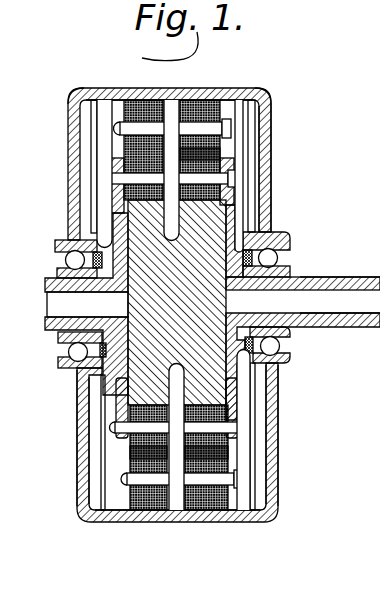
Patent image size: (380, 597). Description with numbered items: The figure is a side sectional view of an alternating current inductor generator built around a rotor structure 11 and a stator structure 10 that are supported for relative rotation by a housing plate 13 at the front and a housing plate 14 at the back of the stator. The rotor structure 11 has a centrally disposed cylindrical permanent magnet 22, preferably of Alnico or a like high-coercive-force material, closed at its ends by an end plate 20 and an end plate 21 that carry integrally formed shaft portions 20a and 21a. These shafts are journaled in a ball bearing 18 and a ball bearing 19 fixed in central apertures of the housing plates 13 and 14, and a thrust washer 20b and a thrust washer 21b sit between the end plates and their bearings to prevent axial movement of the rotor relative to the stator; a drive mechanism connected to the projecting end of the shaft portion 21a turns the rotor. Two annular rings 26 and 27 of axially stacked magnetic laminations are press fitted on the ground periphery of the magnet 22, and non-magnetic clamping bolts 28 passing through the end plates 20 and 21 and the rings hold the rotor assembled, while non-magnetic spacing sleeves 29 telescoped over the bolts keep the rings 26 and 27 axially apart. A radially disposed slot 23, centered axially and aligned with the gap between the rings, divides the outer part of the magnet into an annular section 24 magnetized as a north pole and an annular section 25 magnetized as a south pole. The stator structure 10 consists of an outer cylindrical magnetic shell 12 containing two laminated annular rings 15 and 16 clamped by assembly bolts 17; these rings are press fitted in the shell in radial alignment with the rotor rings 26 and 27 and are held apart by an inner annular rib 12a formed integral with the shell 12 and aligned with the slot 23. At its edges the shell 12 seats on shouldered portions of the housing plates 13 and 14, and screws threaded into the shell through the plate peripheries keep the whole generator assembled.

The stator structure 10 is at (227, 525).
The rotor structure 11 is at (239, 204).
The outer cylindrical magnetic shell 12 is at (216, 90).
The inner annular rib 12a is at (188, 99).
The housing plate 13 is at (68, 164).
The housing plate 14 is at (272, 121).
The annular ring 15 is at (110, 104).
The annular ring 16 is at (236, 90).
The assembly bolts 17 is at (165, 104).
The ball bearing 18 is at (68, 240).
The ball bearing 19 is at (287, 240).
The end plate 20 is at (113, 210).
The shaft portion 20a is at (50, 331).
The thrust washer 20b is at (55, 277).
The end plate 21 is at (235, 232).
The shaft portion 21a is at (337, 277).
The thrust washer 21b is at (292, 263).
The permanent magnet 22 is at (252, 298).
The radially disposed slot 23 is at (233, 383).
The annular section 24 is at (124, 381).
The annular section 25 is at (224, 396).
The annular ring 26 is at (132, 455).
The annular ring 27 is at (224, 450).
The clamping bolts 28 is at (88, 150).
The spacing sleeves 29 is at (272, 149).